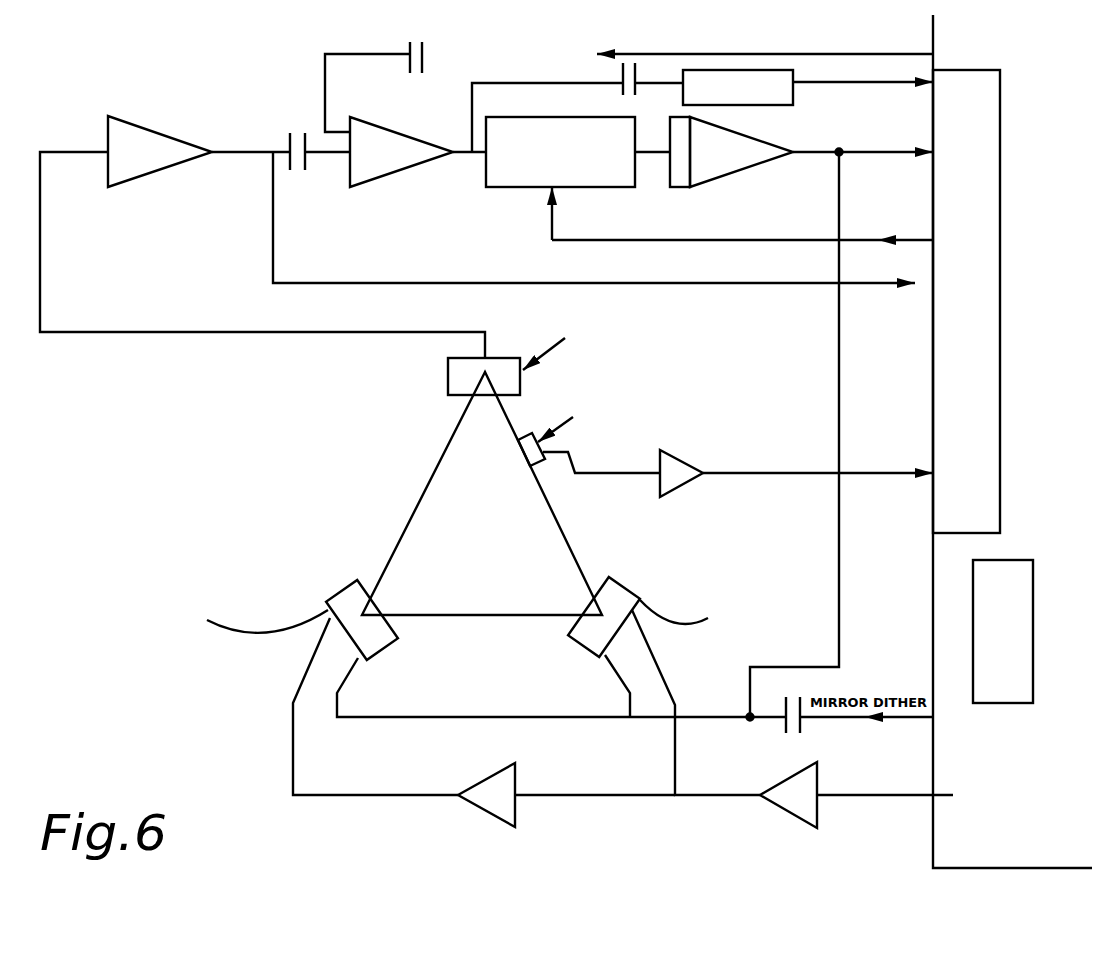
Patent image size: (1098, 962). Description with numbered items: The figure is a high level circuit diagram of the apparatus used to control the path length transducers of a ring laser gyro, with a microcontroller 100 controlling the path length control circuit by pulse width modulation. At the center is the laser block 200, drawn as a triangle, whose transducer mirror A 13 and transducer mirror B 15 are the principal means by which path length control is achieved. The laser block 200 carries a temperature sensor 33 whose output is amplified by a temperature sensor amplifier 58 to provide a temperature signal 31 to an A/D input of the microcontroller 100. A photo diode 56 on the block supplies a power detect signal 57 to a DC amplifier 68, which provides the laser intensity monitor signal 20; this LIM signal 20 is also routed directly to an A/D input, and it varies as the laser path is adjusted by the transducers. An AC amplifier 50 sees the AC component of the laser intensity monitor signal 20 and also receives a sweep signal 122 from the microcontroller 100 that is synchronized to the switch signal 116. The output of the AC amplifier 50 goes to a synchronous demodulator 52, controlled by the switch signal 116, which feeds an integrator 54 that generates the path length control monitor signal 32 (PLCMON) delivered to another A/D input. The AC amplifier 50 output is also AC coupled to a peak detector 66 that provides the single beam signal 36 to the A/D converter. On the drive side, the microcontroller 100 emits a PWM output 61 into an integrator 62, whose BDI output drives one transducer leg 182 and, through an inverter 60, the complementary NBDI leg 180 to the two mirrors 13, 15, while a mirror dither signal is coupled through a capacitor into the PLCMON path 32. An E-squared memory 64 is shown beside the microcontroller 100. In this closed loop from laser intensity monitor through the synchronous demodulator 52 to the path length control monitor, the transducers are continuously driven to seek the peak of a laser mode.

The DC amplifier 68 is at (156, 126).
The laser intensity monitor signal 20 is at (221, 150).
The power detect signal 57 is at (132, 332).
The AC amplifier 50 is at (408, 165).
The sweep signal line 122 is at (790, 55).
The synchronous demodulator 52 is at (583, 187).
The peak detector 66 is at (752, 105).
The single beam signal 36 is at (857, 82).
The integrator 54 is at (722, 177).
The path length control monitor signal 32 is at (842, 145).
The switch signal 116 is at (857, 240).
The microcontroller 100 is at (1092, 866).
The EEPROM memory 64 is at (1000, 560).
The photo diode 56 is at (448, 385).
The laser block 200 is at (547, 607).
The temperature sensor 33 is at (548, 468).
The temperature sensor amplifier 58 is at (673, 490).
The temperature signal 31 is at (868, 475).
The transducer mirror B 15 is at (362, 582).
The transducer mirror A 13 is at (625, 582).
The NBDI drive line 180 is at (292, 760).
The BDI drive line 182 is at (675, 748).
The inverter 60 is at (485, 780).
The integrator 62 is at (810, 765).
The PWM signal line 61 is at (827, 795).